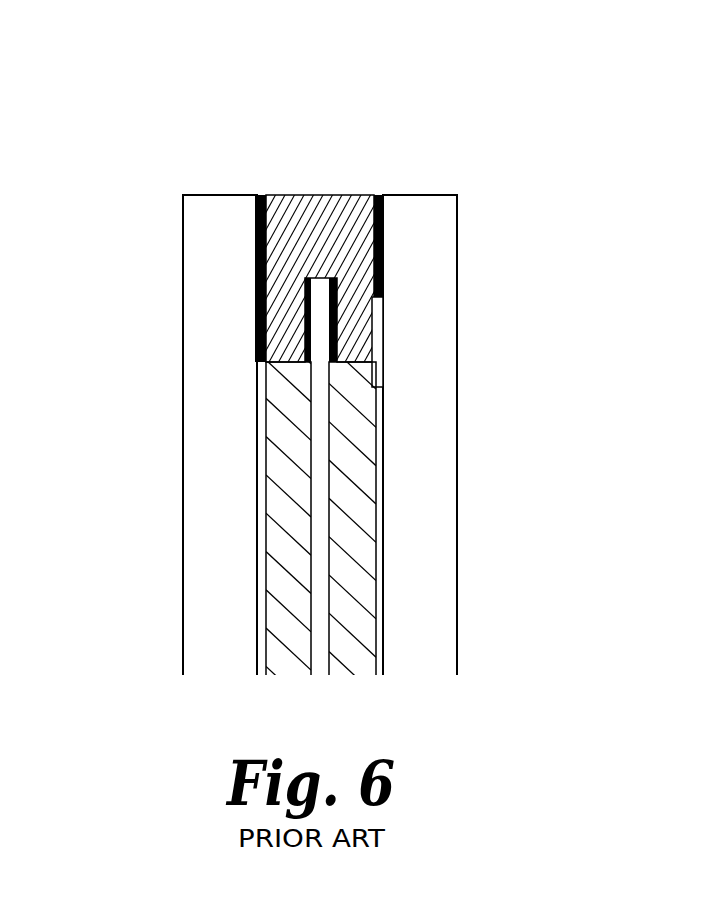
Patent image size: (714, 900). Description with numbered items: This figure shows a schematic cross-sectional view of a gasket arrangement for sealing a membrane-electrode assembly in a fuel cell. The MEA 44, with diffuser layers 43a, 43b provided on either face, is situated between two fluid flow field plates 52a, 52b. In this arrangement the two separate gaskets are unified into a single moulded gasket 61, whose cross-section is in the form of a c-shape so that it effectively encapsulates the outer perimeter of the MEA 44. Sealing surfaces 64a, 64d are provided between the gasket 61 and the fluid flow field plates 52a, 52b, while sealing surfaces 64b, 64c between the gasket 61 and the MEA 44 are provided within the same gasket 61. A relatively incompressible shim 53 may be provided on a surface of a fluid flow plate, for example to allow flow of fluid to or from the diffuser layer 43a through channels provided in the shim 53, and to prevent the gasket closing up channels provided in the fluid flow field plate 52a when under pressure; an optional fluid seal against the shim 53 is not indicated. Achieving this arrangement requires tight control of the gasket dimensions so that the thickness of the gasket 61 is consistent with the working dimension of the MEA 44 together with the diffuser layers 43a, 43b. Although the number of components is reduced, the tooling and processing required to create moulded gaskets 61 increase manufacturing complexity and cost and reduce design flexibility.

The diffuser layer 43a is at (348, 537).
The diffuser layer 43b is at (283, 512).
The MEA 44 is at (318, 620).
The fluid flow field plate 52a is at (440, 290).
The fluid flow field plate 52b is at (240, 290).
The shim 53 is at (375, 337).
The gasket 61 is at (355, 207).
The sealing surface 64a is at (385, 215).
The sealing surface 64b is at (332, 278).
The sealing surface 64c is at (304, 278).
The sealing surface 64d is at (255, 195).